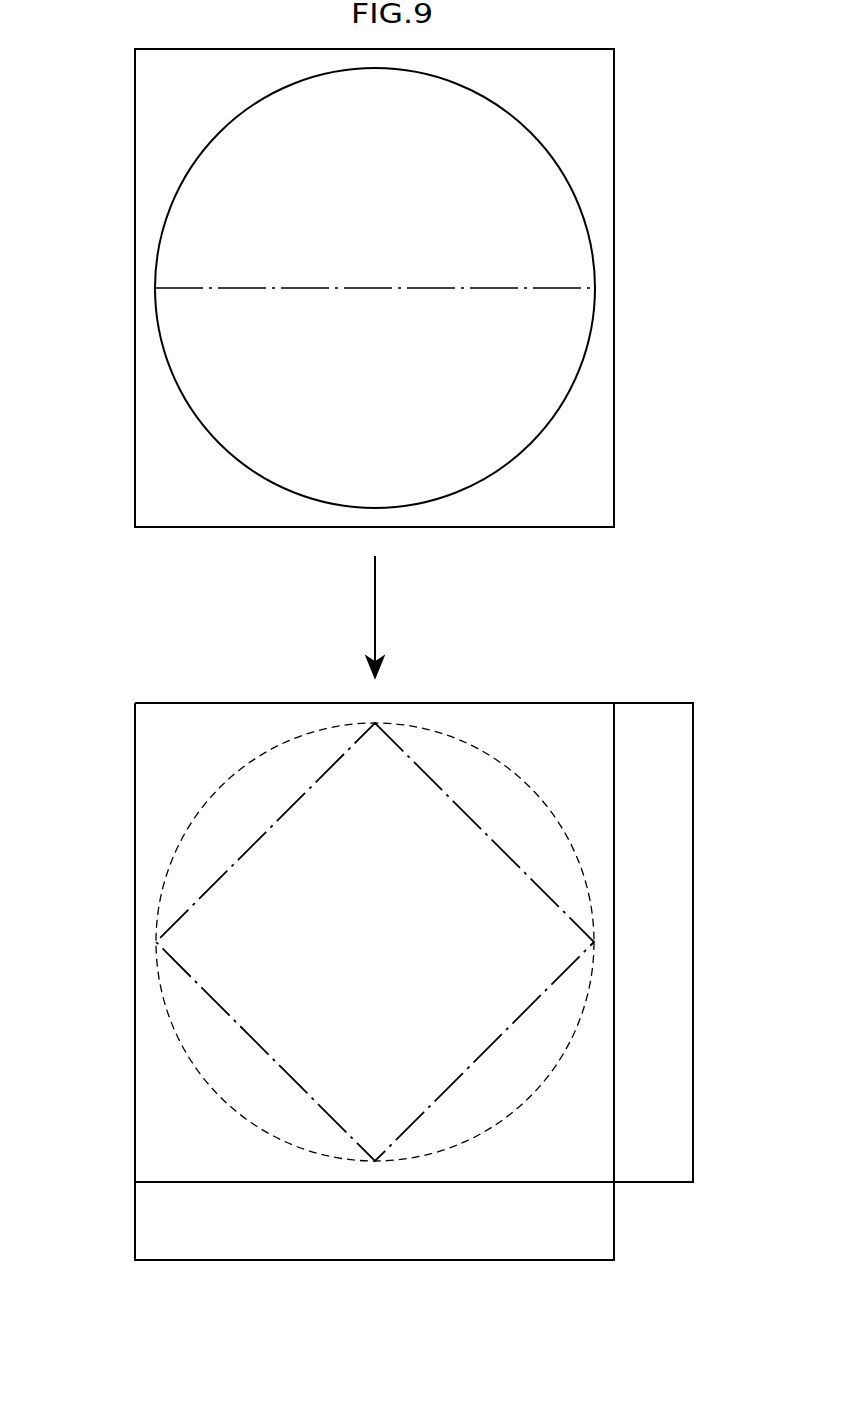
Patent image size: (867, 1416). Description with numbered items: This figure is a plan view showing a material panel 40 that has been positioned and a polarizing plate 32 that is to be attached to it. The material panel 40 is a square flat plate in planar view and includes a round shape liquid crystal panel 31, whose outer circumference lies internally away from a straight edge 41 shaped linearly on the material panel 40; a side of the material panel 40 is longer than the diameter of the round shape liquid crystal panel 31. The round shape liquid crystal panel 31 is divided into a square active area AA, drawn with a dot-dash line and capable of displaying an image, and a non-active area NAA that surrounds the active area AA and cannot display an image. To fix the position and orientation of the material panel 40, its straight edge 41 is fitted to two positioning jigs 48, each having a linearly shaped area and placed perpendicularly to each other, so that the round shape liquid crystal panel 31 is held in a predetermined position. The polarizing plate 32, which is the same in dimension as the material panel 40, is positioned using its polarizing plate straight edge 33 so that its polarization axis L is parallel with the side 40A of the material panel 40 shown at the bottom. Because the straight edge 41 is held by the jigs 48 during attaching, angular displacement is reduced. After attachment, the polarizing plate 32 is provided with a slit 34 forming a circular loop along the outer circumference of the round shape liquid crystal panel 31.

The polarizing plate 32 is at (634, 178).
The polarizing plate straight edge 33 is at (525, 527).
The slit 34 is at (165, 224).
The polarization axis L is at (538, 288).
The material panel 40 is at (207, 703).
The straight edge 41 is at (615, 1094).
The positioning jig 48 is at (667, 969).
The side of the material panel 40A is at (512, 1182).
The round shape liquid crystal panel 31 is at (195, 1085).
The active area AA is at (250, 846).
The non-active area NAA is at (182, 876).